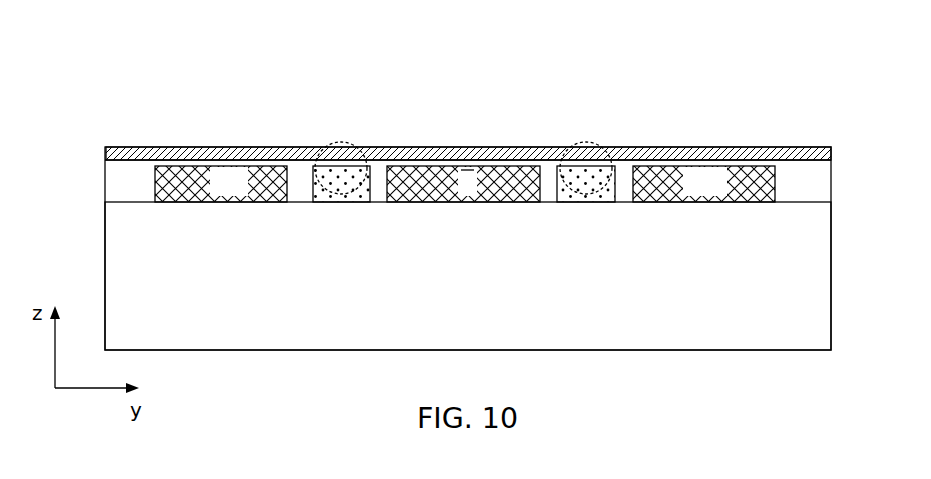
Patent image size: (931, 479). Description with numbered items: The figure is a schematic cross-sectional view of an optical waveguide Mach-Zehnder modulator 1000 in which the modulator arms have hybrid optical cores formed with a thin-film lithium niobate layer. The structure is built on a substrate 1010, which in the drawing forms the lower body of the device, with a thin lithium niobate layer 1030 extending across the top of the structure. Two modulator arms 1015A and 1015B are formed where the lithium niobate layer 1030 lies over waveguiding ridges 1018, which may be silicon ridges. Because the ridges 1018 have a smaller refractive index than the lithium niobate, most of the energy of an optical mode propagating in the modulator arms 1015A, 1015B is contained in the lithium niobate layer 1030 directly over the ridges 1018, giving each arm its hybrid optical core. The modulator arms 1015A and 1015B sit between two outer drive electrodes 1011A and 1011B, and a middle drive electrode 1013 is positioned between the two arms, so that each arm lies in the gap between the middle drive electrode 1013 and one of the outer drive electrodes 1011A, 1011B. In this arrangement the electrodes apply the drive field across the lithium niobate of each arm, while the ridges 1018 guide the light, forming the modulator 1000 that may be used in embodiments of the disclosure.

The optical waveguide MZM 1000 is at (468, 181).
The substrate 1010 is at (182, 324).
The lithium niobate layer 1030 is at (132, 147).
The outer drive electrode 1011A is at (195, 147).
The outer drive electrode 1011B is at (682, 147).
The middle drive electrode 1013 is at (435, 202).
The modulator arm 1015A is at (338, 143).
The modulator arm 1015B is at (583, 141).
The waveguiding ridge 1018 is at (333, 203).